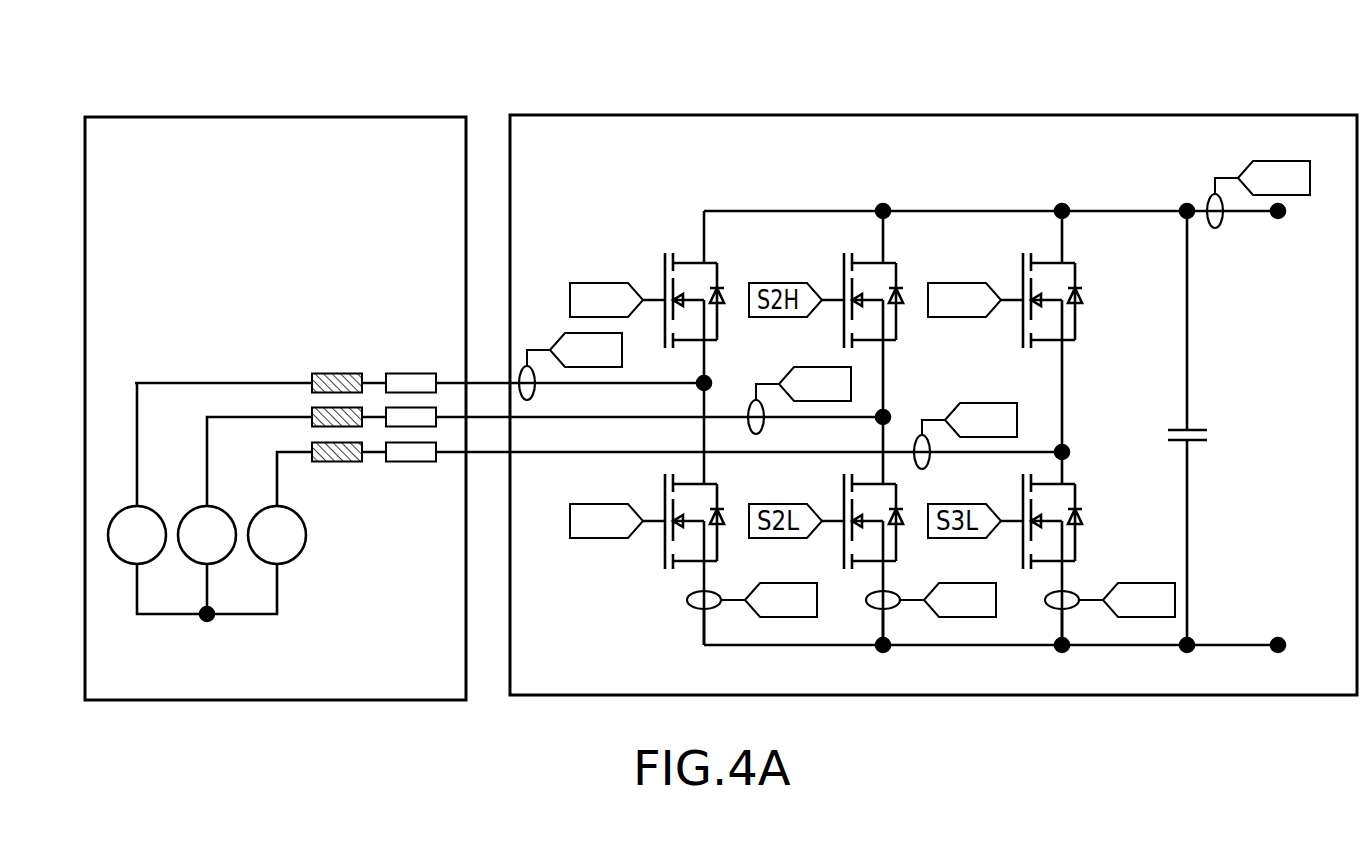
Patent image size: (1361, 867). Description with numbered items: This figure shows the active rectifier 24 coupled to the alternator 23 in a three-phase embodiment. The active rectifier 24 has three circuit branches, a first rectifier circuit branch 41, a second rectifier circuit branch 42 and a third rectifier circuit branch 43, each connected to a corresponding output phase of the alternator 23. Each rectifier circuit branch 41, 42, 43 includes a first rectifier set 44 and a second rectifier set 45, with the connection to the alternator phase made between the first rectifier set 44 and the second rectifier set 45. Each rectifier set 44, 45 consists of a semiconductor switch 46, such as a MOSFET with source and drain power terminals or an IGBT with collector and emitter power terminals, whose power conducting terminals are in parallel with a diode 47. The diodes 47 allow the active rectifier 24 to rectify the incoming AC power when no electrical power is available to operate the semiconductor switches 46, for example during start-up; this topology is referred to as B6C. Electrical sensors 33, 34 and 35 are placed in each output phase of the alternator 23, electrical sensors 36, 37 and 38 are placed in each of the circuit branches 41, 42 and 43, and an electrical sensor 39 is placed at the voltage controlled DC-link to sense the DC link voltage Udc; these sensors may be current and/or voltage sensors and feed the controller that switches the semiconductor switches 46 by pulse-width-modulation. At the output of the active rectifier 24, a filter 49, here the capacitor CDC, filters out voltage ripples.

The alternator 23 is at (275, 117).
The active rectifier 24 is at (768, 115).
The electrical sensor 33 is at (535, 391).
The electrical sensor 34 is at (750, 402).
The electrical sensor 35 is at (917, 437).
The electrical sensor 36 is at (687, 600).
The electrical sensor 37 is at (866, 600).
The electrical sensor 38 is at (1045, 600).
The electrical sensor 39 is at (1211, 195).
The first rectifier circuit branch 41 is at (704, 634).
The second rectifier circuit branch 42 is at (883, 634).
The third rectifier circuit branch 43 is at (1062, 634).
The first rectifier set 44 is at (636, 248).
The second rectifier set 45 is at (636, 558).
The semiconductor switch 46 is at (1028, 290).
The diode 47 is at (1083, 297).
The filter 49 is at (1189, 320).